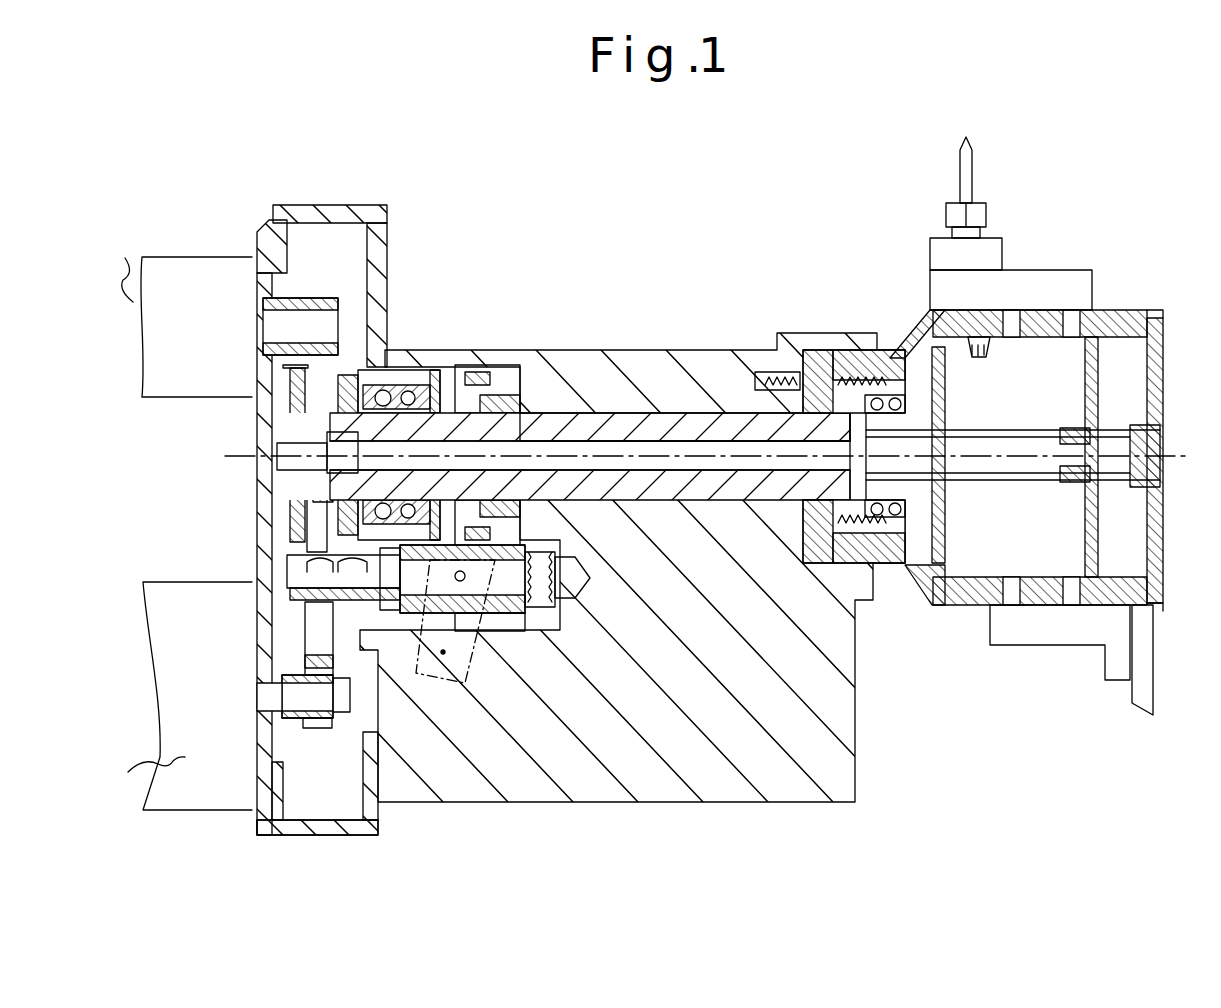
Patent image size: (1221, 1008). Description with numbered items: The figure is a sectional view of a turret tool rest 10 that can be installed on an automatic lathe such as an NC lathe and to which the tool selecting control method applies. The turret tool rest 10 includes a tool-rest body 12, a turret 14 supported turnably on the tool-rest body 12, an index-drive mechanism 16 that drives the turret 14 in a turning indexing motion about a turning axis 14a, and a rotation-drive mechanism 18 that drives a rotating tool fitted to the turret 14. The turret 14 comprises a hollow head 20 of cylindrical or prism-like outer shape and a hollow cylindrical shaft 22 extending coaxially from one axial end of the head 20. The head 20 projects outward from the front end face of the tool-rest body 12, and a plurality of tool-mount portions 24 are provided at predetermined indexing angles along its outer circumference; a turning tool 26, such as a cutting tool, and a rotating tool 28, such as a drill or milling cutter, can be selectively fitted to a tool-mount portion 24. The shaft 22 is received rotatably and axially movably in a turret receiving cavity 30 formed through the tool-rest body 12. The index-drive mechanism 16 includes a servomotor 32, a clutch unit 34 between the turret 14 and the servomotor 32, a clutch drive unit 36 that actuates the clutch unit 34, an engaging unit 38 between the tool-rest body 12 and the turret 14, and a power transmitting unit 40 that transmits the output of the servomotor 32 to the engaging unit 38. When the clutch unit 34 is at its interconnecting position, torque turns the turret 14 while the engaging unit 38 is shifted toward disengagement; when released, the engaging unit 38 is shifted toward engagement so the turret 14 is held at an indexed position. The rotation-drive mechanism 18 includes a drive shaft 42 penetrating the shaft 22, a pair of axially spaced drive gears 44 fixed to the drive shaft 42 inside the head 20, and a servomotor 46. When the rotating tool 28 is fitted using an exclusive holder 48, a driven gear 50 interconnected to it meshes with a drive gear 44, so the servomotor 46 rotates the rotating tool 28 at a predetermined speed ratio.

The turret tool rest 10 is at (612, 258).
The tool-rest body 12 is at (825, 803).
The turret 14 is at (935, 605).
The turning axis 14a is at (742, 342).
The index-drive mechanism 16 is at (235, 830).
The rotation-drive mechanism 18 is at (225, 235).
The hollow head 20 is at (1145, 310).
The hollow cylindrical shaft 22 is at (655, 370).
The tool-mount portion 24 is at (1045, 308).
The turning tool 26 is at (1153, 688).
The rotating tool 28 is at (975, 193).
The turret receiving cavity 30 is at (575, 363).
The servomotor 32 is at (170, 763).
The clutch unit 34 is at (504, 705).
The clutch drive unit 36 is at (440, 690).
The engaging unit 38 is at (842, 353).
The power transmitting unit 40 is at (435, 366).
The drive shaft 42 is at (607, 368).
The drive gear 44 is at (915, 353).
The servomotor 46 is at (150, 302).
The exclusive holder 48 is at (1008, 250).
The driven gear 50 is at (983, 355).